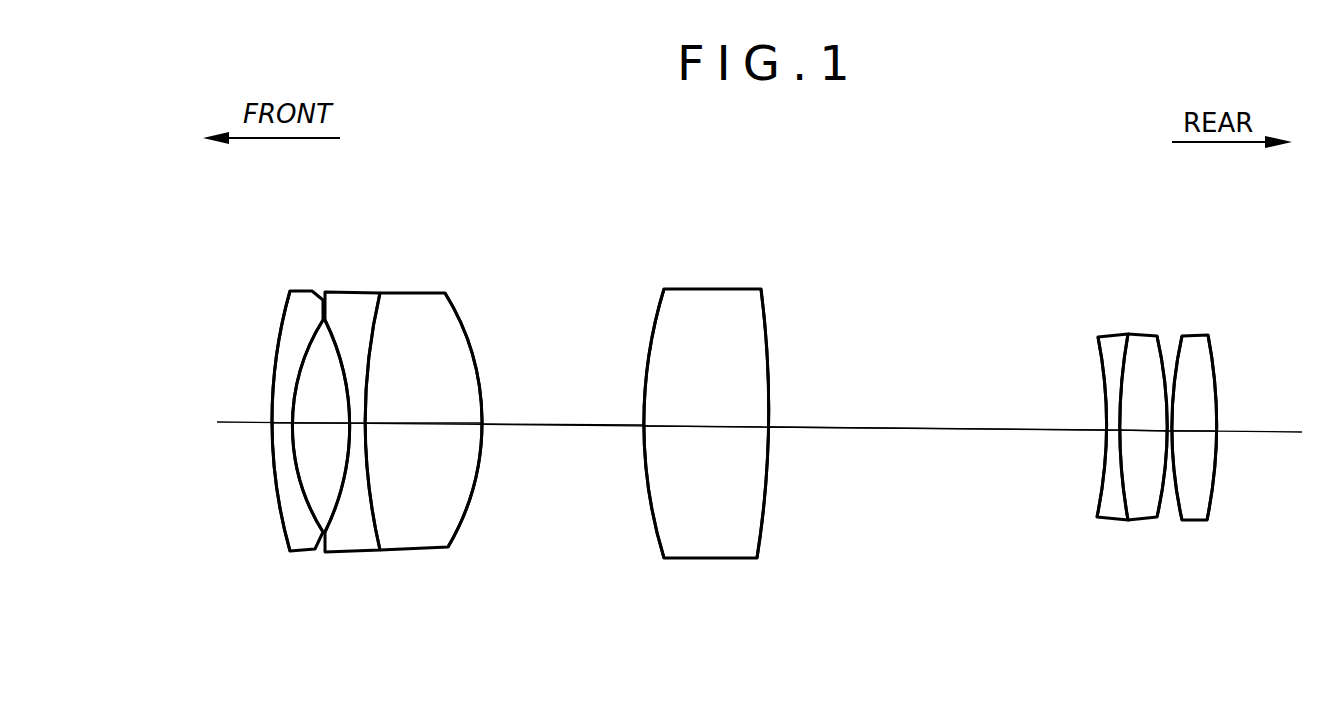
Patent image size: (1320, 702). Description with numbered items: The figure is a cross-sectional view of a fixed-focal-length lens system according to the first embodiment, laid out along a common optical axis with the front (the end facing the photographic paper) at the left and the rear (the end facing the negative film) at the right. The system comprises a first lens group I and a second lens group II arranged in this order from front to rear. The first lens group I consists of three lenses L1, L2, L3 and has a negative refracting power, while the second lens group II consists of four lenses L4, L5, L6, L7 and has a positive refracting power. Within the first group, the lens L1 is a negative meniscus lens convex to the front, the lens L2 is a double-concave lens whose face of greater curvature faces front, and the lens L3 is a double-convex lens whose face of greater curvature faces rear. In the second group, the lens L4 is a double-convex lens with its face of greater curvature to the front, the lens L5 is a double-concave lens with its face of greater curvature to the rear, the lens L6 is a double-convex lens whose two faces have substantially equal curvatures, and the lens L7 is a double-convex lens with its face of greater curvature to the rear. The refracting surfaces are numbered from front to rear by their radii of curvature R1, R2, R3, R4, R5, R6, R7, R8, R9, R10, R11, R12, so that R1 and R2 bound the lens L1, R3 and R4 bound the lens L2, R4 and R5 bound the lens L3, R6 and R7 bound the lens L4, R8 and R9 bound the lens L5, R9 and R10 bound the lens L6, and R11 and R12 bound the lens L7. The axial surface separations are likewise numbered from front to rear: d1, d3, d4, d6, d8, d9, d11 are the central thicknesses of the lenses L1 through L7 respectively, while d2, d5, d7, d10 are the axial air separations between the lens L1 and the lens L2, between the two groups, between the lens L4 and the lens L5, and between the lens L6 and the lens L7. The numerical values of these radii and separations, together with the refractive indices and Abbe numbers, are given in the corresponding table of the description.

The first lens group I is at (252, 244).
The second lens group II is at (632, 247).
The lens L1 is at (300, 296).
The lens L2 is at (355, 299).
The lens L3 is at (428, 306).
The lens L4 is at (708, 297).
The lens L5 is at (1114, 338).
The lens L6 is at (1148, 341).
The lens L7 is at (1196, 341).
The radius of curvature R1 is at (278, 503).
The radius of curvature R2 is at (311, 505).
The radius of curvature R3 is at (332, 508).
The radius of curvature R4 is at (377, 510).
The radius of curvature R5 is at (461, 521).
The radius of curvature R6 is at (651, 510).
The radius of curvature R7 is at (763, 533).
The radius of curvature R8 is at (1100, 482).
The radius of curvature R9 is at (1125, 490).
The radius of curvature R10 is at (1160, 490).
The radius of curvature R11 is at (1182, 492).
The radius of curvature R12 is at (1216, 487).
The axial surface separation d1 is at (278, 424).
The axial surface separation d2 is at (314, 424).
The axial surface separation d3 is at (360, 422).
The axial surface separation d4 is at (447, 425).
The axial surface separation d5 is at (552, 426).
The axial surface separation d6 is at (740, 427).
The axial surface separation d7 is at (910, 428).
The axial surface separation d8 is at (1115, 431).
The axial surface separation d9 is at (1140, 430).
The axial surface separation d10 is at (1169, 430).
The axial surface separation d11 is at (1197, 430).